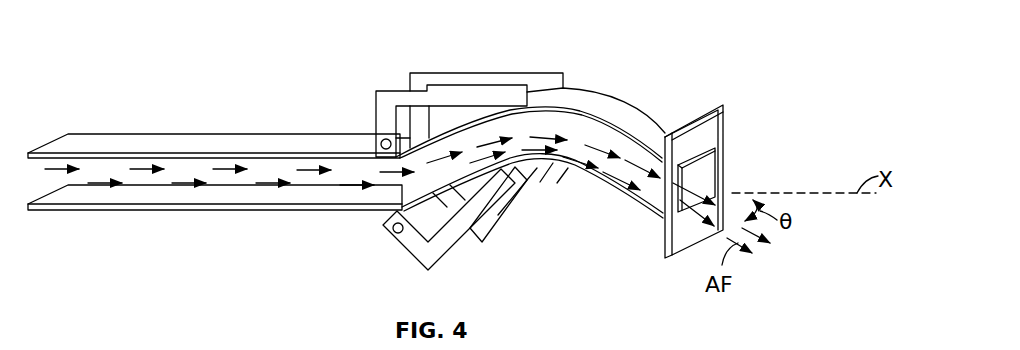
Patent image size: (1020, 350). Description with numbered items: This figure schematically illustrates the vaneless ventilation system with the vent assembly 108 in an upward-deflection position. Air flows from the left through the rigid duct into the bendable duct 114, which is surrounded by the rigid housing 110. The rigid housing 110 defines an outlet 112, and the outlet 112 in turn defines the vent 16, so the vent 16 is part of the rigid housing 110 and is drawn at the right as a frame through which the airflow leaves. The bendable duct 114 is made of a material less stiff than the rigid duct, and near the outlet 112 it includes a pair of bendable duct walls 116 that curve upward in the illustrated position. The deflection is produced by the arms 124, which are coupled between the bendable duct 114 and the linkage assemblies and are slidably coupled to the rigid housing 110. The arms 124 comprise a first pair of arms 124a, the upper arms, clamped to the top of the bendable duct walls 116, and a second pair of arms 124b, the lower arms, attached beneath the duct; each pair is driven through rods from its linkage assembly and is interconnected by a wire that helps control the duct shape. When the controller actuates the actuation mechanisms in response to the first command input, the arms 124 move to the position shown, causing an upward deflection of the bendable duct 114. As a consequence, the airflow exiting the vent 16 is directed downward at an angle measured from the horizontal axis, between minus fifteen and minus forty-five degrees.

The vent assembly 108 is at (120, 62).
The rigid housing 110 is at (722, 103).
The outlet 112 is at (717, 157).
The vent 16 is at (716, 125).
The bendable duct 114 is at (623, 195).
The bendable duct walls 116 is at (572, 100).
The arms 124 is at (435, 72).
The first pair of arms 124a is at (375, 132).
The second pair of arms 124b is at (523, 205).